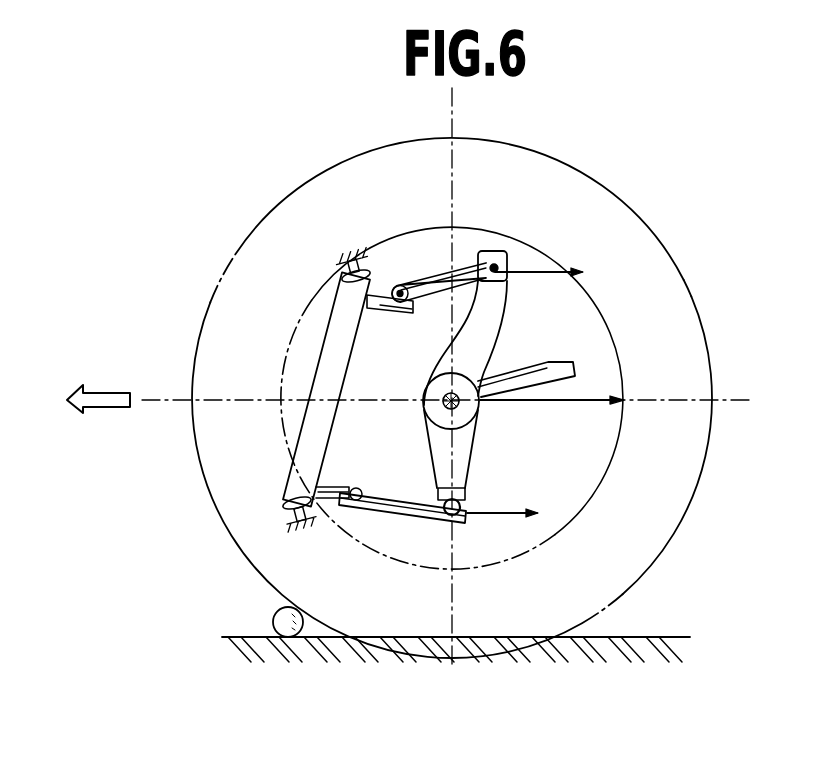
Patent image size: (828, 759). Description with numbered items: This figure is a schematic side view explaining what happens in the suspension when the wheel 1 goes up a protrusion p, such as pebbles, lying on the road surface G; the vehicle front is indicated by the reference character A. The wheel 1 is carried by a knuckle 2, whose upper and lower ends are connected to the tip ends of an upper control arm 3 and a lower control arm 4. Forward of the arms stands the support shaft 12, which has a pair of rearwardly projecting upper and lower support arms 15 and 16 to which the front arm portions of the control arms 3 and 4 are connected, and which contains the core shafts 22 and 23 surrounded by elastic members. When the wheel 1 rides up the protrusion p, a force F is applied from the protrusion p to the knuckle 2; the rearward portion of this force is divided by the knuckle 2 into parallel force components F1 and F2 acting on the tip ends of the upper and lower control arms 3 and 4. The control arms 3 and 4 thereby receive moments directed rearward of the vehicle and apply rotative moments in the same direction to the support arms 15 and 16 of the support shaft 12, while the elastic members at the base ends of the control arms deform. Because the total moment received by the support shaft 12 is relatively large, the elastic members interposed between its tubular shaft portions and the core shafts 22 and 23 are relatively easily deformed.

The wheel 1 is at (602, 182).
The knuckle 2 is at (487, 335).
The upper control arm 3 is at (428, 277).
The lower control arm 4 is at (407, 511).
The support shaft 12 is at (314, 378).
The upper support arm 15 is at (378, 313).
The lower support arm 16 is at (335, 486).
The core shaft 22 is at (348, 265).
The core shaft 23 is at (287, 510).
The force F is at (552, 403).
The force component F1 is at (539, 277).
The force component F2 is at (498, 512).
The vehicle front A is at (108, 400).
The road surface G is at (640, 637).
The protrusion p is at (274, 620).